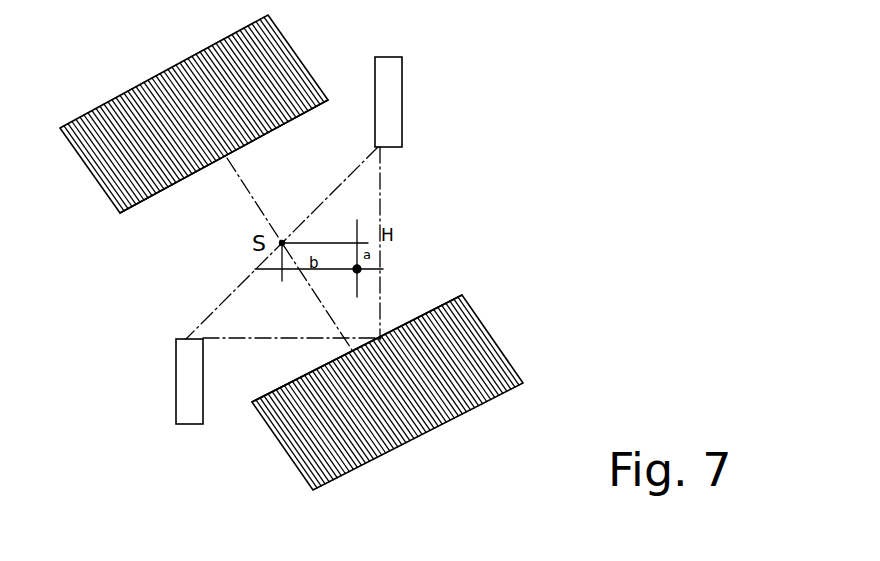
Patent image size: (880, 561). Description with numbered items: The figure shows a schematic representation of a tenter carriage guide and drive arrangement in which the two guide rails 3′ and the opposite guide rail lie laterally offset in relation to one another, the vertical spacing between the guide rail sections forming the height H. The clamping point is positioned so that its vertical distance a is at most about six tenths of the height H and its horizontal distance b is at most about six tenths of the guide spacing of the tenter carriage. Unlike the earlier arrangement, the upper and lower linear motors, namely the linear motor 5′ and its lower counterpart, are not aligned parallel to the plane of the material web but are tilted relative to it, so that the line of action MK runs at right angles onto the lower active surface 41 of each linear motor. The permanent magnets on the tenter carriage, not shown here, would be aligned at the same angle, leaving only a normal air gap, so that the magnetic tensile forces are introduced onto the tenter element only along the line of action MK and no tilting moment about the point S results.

The linear motor 5′ is at (148, 105).
The guide rail 3′ is at (392, 87).
The active surface 41 is at (162, 192).